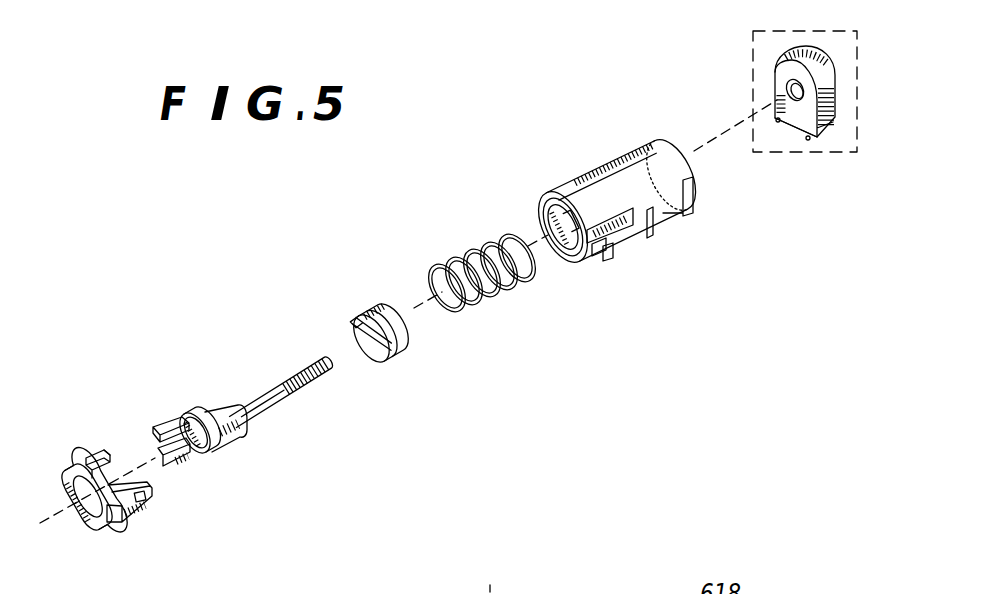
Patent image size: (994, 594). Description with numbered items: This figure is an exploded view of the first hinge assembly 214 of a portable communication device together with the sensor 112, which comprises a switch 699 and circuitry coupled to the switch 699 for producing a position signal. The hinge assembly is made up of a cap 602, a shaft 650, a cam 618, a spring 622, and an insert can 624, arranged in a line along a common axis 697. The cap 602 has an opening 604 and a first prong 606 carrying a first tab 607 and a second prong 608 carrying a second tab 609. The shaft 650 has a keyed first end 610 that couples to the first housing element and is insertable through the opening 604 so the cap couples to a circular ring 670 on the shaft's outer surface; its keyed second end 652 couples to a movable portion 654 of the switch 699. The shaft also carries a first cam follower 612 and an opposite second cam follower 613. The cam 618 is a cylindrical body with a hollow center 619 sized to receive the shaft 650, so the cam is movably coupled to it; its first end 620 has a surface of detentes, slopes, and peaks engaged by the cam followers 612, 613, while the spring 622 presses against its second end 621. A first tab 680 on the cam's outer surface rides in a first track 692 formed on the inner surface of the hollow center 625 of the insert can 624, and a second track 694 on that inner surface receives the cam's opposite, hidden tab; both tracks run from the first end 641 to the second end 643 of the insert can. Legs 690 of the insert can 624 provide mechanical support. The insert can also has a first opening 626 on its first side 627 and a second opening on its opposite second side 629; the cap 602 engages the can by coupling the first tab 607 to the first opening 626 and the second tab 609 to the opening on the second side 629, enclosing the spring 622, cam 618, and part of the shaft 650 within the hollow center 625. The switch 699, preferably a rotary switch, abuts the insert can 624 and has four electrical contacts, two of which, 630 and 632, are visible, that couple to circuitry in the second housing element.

The sensor 112 is at (763, 33).
The first hinge assembly 214 is at (479, 104).
The cap 602 is at (67, 470).
The opening 604 is at (120, 492).
The first prong 606 is at (127, 517).
The first tab 607 is at (142, 503).
The second prong 608 is at (80, 463).
The second tab 609 is at (102, 465).
The first end 610 is at (228, 412).
The first cam follower 612 is at (225, 430).
The second cam follower 613 is at (205, 410).
The cam 618 is at (403, 353).
The hollow center 619 is at (365, 362).
The first end 620 is at (395, 335).
The second end 621 is at (413, 327).
The spring 622 is at (488, 290).
The insert can 624 is at (609, 188).
The hollow center 625 is at (541, 217).
The first opening 626 is at (590, 252).
The first side 627 is at (688, 183).
The second side 629 is at (610, 163).
The electrical contact 630 is at (779, 123).
The electrical contact 632 is at (809, 140).
The first end 641 is at (541, 220).
The second end 643 is at (690, 170).
The shaft 650 is at (293, 373).
The second end 652 is at (320, 353).
The movable portion 654 is at (788, 88).
The circular ring 670 is at (188, 413).
The first tab 680 is at (402, 308).
The legs 690 is at (672, 208).
The first track 692 is at (563, 207).
The second track 694 is at (542, 258).
The axis 697 is at (50, 522).
The switch 699 is at (805, 120).